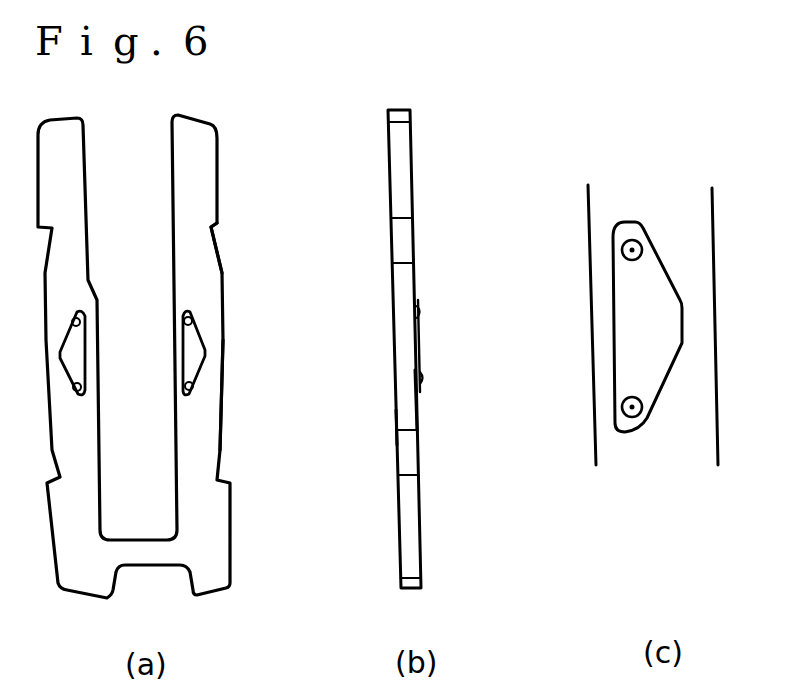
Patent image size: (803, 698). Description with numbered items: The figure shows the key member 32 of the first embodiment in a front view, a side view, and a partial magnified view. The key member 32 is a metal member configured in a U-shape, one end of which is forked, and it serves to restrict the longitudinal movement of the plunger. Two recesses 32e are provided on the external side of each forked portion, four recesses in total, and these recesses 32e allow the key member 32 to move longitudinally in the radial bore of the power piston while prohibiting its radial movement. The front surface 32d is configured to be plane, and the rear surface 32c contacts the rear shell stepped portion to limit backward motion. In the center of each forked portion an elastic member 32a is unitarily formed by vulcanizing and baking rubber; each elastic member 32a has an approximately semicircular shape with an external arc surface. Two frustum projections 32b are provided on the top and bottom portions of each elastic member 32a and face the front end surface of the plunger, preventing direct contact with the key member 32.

The key member 32 is at (207, 153).
The elastic member 32a is at (203, 353).
The frustum projection 32b is at (193, 318).
The rear surface 32c is at (220, 422).
The front surface 32d is at (395, 422).
The recess 32e is at (215, 228).